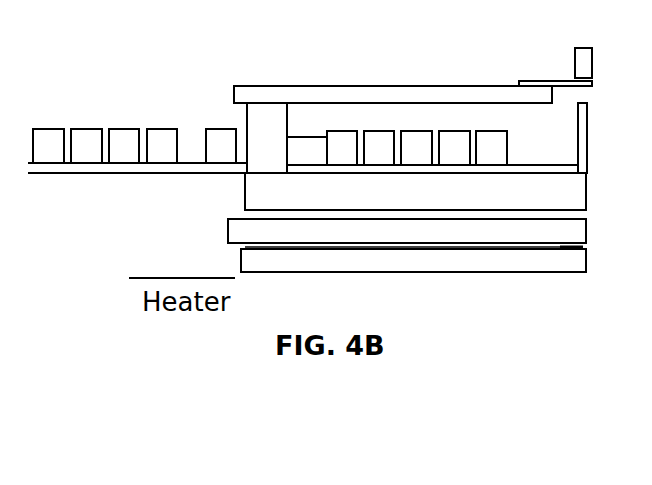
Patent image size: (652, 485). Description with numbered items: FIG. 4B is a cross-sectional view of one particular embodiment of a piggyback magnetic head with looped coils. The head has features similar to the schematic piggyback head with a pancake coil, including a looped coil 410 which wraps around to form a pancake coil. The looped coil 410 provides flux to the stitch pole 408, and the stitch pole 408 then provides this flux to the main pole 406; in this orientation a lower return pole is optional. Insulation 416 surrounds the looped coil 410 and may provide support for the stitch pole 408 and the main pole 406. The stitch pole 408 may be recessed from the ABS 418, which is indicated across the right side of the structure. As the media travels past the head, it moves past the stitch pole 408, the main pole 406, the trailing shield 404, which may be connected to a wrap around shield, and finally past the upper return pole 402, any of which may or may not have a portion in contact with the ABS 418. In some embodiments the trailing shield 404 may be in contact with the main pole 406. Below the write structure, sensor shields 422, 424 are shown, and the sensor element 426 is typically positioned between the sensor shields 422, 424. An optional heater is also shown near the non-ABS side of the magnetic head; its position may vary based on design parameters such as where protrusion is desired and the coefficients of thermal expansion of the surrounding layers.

The upper return pole 402 is at (593, 61).
The trailing shield 404 is at (587, 145).
The main pole 406 is at (558, 80).
The stitch pole 408 is at (418, 86).
The looped coil 410 is at (488, 130).
The insulation 416 is at (468, 204).
The ABS 418 is at (594, 190).
The sensor shield 422 is at (228, 231).
The sensor shield 424 is at (241, 256).
The sensor element 426 is at (583, 247).